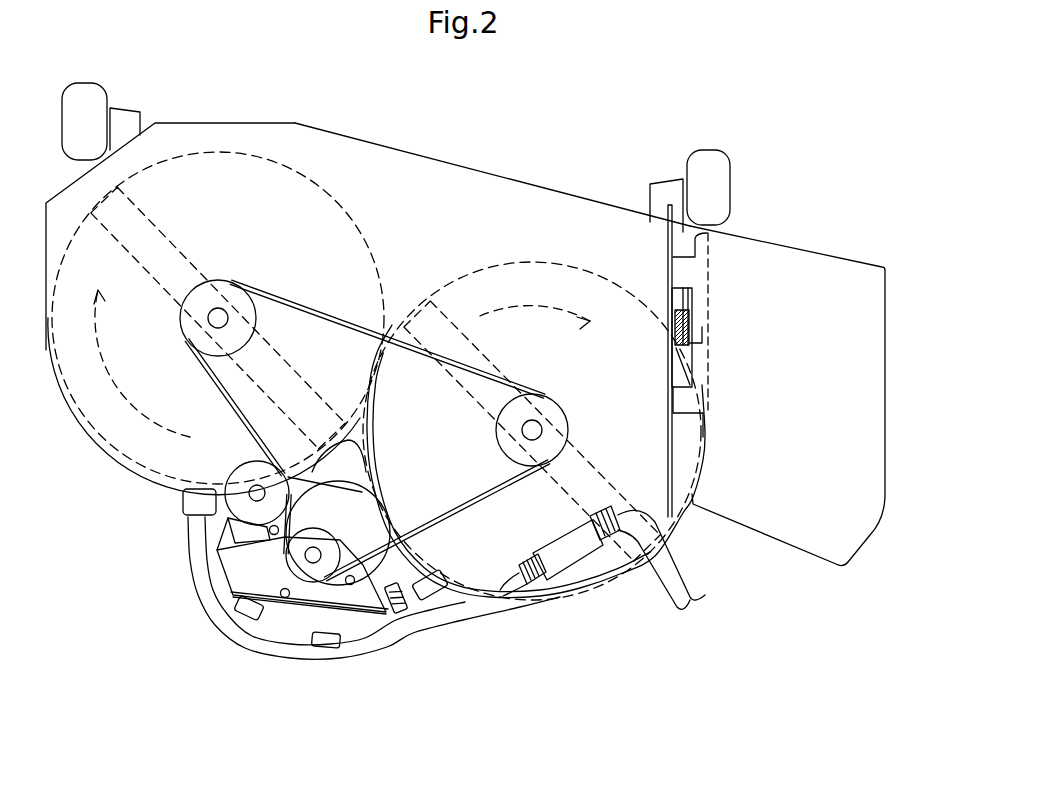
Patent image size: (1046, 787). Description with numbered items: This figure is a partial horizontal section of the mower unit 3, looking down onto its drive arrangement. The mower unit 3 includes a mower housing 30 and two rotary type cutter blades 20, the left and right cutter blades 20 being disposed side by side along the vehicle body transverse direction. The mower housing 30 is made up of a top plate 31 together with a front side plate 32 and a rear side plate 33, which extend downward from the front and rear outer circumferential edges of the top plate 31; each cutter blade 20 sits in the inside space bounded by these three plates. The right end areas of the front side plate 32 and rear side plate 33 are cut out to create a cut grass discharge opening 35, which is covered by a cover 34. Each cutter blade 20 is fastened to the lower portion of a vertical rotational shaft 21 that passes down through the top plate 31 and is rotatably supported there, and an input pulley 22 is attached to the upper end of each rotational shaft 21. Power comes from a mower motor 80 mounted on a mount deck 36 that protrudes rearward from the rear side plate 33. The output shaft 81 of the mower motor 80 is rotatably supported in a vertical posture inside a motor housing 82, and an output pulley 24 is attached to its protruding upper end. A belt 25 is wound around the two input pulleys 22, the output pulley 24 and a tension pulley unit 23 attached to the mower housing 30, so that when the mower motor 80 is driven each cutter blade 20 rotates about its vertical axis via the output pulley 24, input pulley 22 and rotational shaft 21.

The mower unit 3 is at (509, 153).
The cutter blade 20 is at (160, 286).
The rotational shaft 21 is at (214, 320).
The input pulley 22 is at (236, 283).
The tension pulley unit 23 is at (243, 473).
The output pulley 24 is at (303, 568).
The belt 25 is at (298, 308).
The mower housing 30 is at (379, 142).
The top plate 31 is at (303, 163).
The front side plate 32 is at (573, 200).
The rear side plate 33 is at (113, 460).
The cover 34 is at (791, 275).
The cut grass discharge opening 35 is at (708, 364).
The mount deck 36 is at (413, 633).
The mower motor 80 is at (347, 520).
The output shaft 81 is at (308, 556).
The motor housing 82 is at (362, 608).